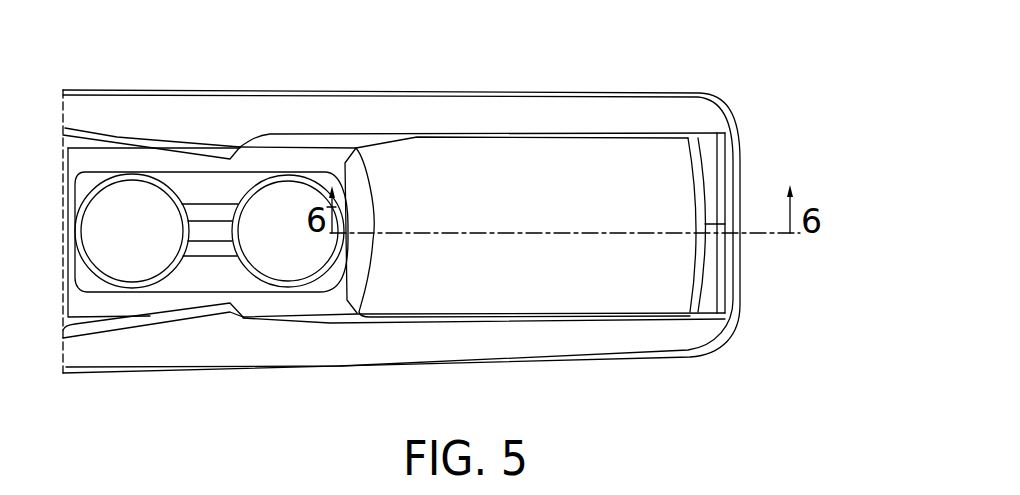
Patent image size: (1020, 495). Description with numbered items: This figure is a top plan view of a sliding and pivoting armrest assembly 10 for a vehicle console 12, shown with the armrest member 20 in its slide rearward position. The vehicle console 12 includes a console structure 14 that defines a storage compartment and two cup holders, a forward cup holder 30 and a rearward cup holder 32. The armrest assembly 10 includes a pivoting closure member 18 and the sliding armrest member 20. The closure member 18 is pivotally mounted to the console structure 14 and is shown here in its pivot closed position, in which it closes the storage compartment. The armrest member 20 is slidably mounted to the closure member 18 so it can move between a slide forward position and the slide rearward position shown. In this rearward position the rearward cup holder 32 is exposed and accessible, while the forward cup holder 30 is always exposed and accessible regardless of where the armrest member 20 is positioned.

The armrest assembly 10 is at (536, 118).
The vehicle console 12 is at (141, 399).
The console structure 14 is at (290, 358).
The closure member 18 is at (712, 292).
The armrest member 20 is at (610, 292).
The forward cup holder 30 is at (132, 203).
The rearward cup holder 32 is at (283, 193).